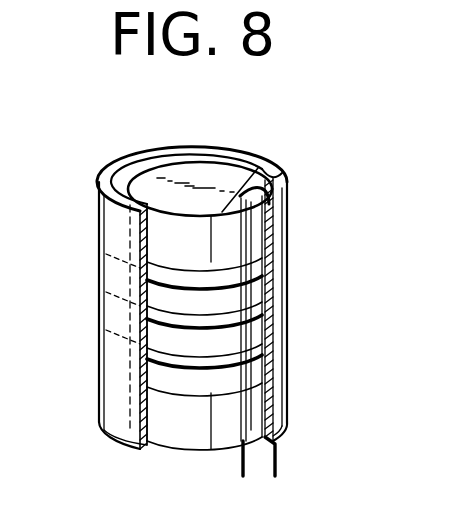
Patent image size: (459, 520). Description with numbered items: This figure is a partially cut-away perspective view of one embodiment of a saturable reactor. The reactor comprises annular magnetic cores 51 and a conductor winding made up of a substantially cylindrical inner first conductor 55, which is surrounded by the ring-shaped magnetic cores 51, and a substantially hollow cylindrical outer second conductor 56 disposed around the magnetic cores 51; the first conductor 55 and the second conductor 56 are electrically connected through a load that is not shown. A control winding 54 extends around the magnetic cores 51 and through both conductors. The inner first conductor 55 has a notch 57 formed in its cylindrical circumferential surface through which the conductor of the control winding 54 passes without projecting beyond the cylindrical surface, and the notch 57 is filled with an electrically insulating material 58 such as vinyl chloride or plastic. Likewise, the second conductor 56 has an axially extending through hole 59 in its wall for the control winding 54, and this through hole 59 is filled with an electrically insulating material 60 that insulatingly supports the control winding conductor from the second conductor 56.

The annular magnetic cores 51 is at (253, 282).
The control winding 54 is at (282, 167).
The inner first conductor 55 is at (186, 181).
The outer second conductor 56 is at (99, 173).
The notch 57 is at (252, 178).
The electrically insulating material 58 is at (256, 236).
The through hole 59 is at (285, 192).
The electrically insulating material 60 is at (287, 227).